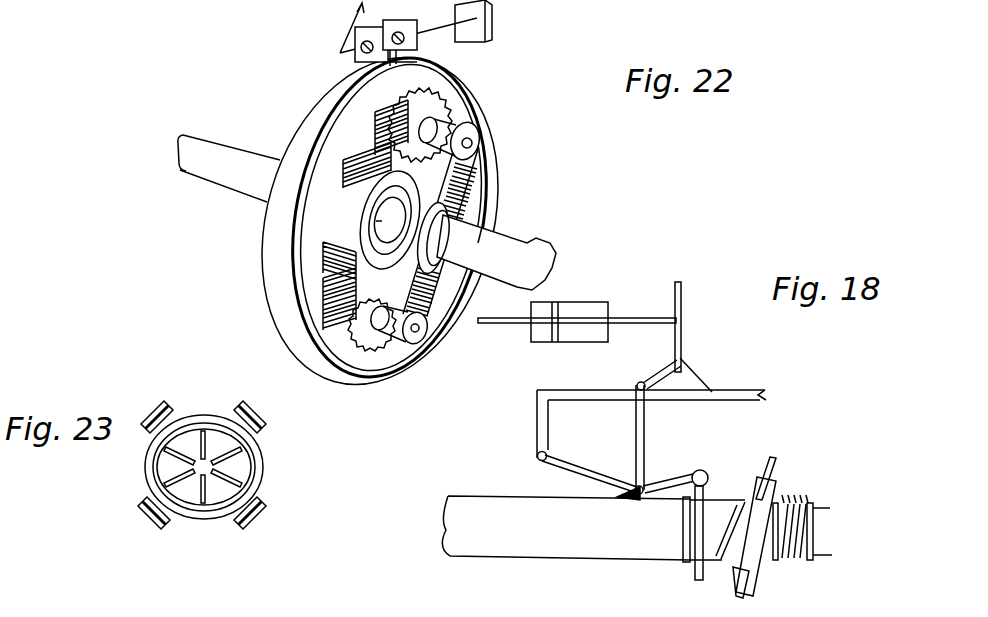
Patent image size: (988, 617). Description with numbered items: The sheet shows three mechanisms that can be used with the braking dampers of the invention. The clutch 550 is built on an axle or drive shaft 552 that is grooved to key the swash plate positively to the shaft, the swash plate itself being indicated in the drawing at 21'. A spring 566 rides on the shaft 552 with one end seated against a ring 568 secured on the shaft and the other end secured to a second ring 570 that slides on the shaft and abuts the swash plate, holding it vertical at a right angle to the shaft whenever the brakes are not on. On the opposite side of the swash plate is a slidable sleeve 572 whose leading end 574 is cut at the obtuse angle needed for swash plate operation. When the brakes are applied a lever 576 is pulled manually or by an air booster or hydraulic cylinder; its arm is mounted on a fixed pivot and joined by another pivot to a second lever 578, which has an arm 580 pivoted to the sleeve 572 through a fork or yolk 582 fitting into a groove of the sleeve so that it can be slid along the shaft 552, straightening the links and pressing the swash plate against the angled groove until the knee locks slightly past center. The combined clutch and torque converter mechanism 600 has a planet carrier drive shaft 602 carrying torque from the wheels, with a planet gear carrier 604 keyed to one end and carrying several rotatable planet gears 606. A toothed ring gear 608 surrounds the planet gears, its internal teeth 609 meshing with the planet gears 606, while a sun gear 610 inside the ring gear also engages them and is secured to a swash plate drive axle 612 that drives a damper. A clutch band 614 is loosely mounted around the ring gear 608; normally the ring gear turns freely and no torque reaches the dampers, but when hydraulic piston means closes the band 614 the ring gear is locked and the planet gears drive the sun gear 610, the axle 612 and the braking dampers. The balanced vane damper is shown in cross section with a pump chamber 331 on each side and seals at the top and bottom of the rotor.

In FIG. 22, the mechanism 600 is at (236, 218).
In FIG. 22, the planet carrier drive shaft 602 is at (512, 242).
In FIG. 22, the planet gear carrier 604 is at (447, 178).
In FIG. 22, the planet gears 606 is at (437, 103).
In FIG. 22, the toothed ring gear 608 is at (287, 342).
In FIG. 22, the internal teeth 609 is at (318, 260).
In FIG. 22, the sun gear 610 is at (350, 168).
In FIG. 22, the swash plate drive axle 612 is at (202, 157).
In FIG. 22, the clutch band 614 is at (342, 90).
In FIG. 18, the clutch 550 is at (523, 432).
In FIG. 18, the drive shaft 552 is at (538, 536).
In FIG. 18, the spring 566 is at (797, 563).
In FIG. 18, the ring 568 is at (813, 500).
In FIG. 18, the second ring 570 is at (773, 563).
In FIG. 18, the slidable sleeve 572 is at (717, 498).
In FIG. 18, the leading end 574 is at (727, 550).
In FIG. 18, the lever 576 is at (680, 308).
In FIG. 18, the second lever 578 is at (641, 417).
In FIG. 18, the arm 580 is at (655, 482).
In FIG. 18, the fork or yolk 582 is at (692, 563).
In FIG. 18, the plate 21' is at (769, 512).
In FIG. 23, the pump chamber 331 is at (250, 518).